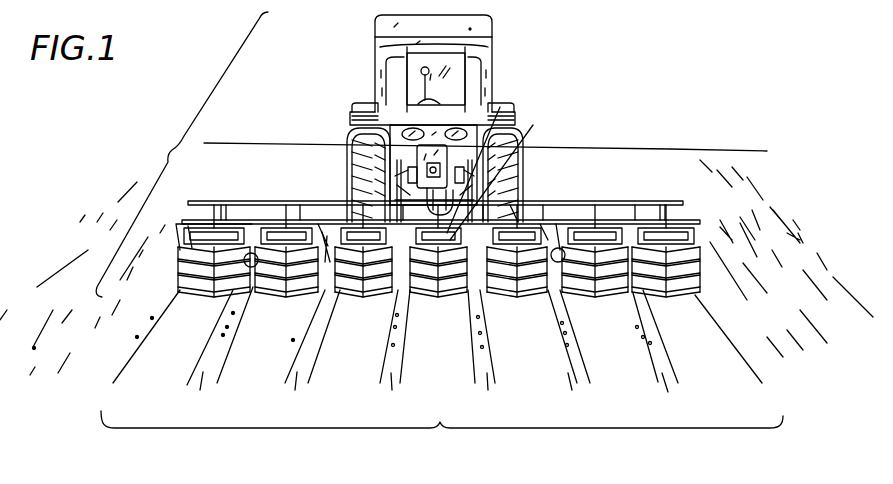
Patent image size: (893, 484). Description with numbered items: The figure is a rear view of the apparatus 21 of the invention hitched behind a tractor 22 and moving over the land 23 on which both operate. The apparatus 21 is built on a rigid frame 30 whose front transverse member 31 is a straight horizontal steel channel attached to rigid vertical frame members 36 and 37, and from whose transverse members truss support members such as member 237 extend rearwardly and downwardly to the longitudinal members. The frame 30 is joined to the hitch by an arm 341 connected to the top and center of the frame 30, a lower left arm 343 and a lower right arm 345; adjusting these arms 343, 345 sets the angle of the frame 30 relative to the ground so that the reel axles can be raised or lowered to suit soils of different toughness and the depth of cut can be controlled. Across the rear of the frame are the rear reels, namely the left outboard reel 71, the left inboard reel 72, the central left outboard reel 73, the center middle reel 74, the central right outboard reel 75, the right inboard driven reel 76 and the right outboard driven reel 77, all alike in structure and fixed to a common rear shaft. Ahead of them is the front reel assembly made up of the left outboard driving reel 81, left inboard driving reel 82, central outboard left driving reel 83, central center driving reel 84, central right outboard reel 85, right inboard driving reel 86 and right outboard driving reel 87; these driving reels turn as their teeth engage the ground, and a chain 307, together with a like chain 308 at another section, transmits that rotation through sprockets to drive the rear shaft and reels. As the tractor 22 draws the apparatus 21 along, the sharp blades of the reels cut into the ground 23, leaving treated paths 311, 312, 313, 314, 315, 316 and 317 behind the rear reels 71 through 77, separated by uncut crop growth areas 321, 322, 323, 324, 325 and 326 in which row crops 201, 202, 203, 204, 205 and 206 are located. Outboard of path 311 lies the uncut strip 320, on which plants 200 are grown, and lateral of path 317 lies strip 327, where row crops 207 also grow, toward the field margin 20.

The field headland boundary 20 is at (172, 151).
The apparatus 21 is at (253, 195).
The tractor 22 is at (380, 67).
The land 23 is at (249, 125).
The frame 30 is at (665, 200).
The front transverse member 31 is at (200, 201).
The vertical frame member 36 is at (240, 188).
The vertical frame member 37 is at (638, 213).
The left outboard reel 71 is at (210, 300).
The left inboard reel 72 is at (297, 293).
The central left outboard reel 73 is at (380, 293).
The center middle reel 74 is at (457, 293).
The central right outboard reel 75 is at (533, 293).
The right inboard driven reel 76 is at (610, 293).
The right outboard driven reel 77 is at (690, 293).
The left outboard driving reel 81 is at (197, 233).
The left inboard driving reel 82 is at (300, 212).
The central outboard left driving reel 83 is at (365, 232).
The central center driving reel 84 is at (544, 176).
The central right outboard reel 85 is at (518, 205).
The right inboard driving reel 86 is at (578, 233).
The right outboard driving reel 87 is at (660, 240).
The seed marker 200 is at (141, 329).
The row crop 201 is at (222, 336).
The row crop 202 is at (293, 340).
The row crop 203 is at (391, 345).
The row crop 204 is at (480, 347).
The row crop 205 is at (565, 345).
The row crop 206 is at (642, 338).
The row crop 207 is at (740, 342).
The strut 237 is at (632, 213).
The chain 307 is at (324, 232).
The parallel linkage 308 is at (562, 232).
The treated area 311 is at (164, 394).
The treated area 312 is at (269, 394).
The treated area 313 is at (359, 394).
The treated area 314 is at (454, 394).
The treated area 315 is at (553, 394).
The treated area 316 is at (631, 394).
The treated area 317 is at (729, 394).
The uncut strip 320 is at (121, 354).
The uncut area 321 is at (216, 352).
The uncut area 322 is at (309, 353).
The uncut area 323 is at (394, 353).
The uncut area 324 is at (488, 353).
The uncut area 325 is at (576, 353).
The uncut area 326 is at (663, 353).
The strip 327 is at (741, 308).
The arm 341 is at (500, 107).
The lower left arm 343 is at (353, 112).
The lower right arm 345 is at (537, 123).